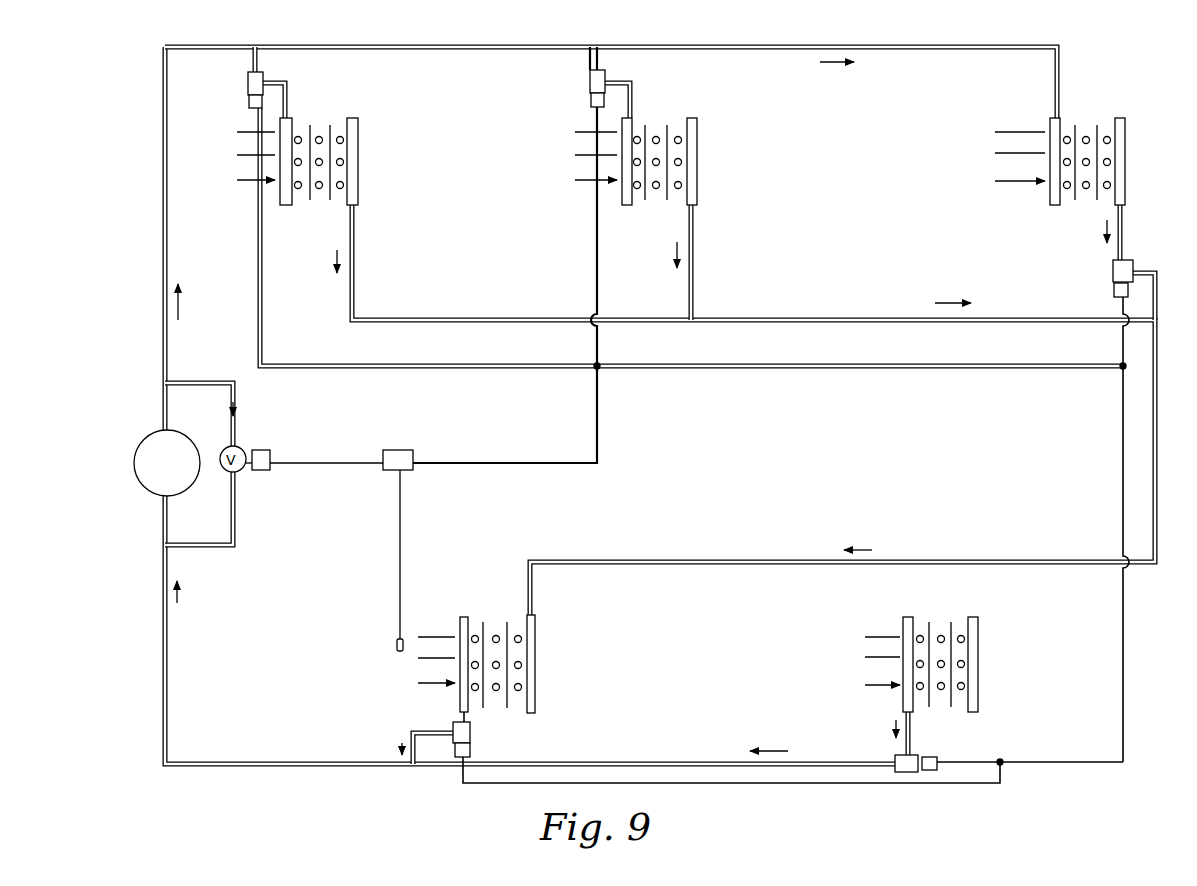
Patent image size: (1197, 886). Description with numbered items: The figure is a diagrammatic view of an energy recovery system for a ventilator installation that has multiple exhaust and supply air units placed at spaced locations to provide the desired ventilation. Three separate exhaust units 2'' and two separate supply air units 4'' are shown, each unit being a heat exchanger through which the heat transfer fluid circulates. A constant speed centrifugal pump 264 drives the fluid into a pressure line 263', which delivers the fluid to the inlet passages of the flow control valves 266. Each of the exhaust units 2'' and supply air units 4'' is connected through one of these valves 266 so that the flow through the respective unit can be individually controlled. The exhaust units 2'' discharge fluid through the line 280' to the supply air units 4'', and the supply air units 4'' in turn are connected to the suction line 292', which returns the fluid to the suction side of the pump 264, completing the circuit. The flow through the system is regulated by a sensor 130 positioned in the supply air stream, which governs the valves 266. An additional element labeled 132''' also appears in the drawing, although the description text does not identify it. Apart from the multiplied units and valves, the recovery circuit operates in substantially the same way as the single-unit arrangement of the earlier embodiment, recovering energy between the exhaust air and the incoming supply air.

The exhaust unit 2'' is at (688, 139).
The supply air unit 4'' is at (698, 641).
The sensor 130 is at (397, 647).
The control valve 132''' is at (422, 530).
The pressure line 263' is at (611, 82).
The constant speed centrifugal pump 264 is at (156, 485).
The flow control valve 266 is at (248, 80).
The line 280' is at (753, 410).
The suction line 292' is at (530, 405).